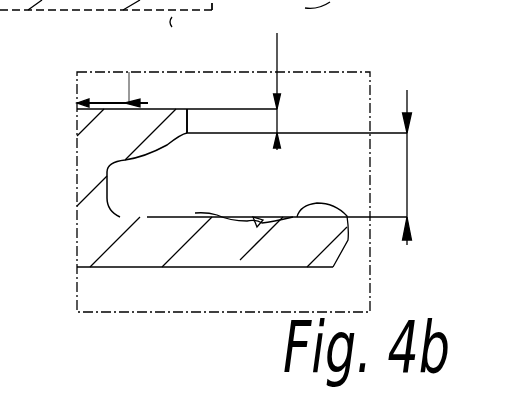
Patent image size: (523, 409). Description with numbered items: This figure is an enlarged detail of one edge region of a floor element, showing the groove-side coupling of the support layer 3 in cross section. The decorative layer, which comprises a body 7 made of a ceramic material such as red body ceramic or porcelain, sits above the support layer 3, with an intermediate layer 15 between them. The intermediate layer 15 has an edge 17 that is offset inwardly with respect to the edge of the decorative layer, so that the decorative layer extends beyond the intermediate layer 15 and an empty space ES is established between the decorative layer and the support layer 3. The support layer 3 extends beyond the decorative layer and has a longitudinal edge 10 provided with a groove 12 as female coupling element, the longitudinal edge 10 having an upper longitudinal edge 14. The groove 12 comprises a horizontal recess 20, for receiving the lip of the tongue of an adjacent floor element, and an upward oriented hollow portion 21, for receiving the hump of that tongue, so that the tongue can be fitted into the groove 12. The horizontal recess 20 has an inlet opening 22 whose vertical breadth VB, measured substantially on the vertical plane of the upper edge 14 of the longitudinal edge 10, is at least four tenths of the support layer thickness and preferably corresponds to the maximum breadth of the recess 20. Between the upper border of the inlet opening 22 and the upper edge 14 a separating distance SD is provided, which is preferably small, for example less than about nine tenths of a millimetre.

The longitudinal edge 10 is at (380, 251).
The groove 12 is at (317, 131).
The upper longitudinal edge 14 is at (188, 110).
The edge of the intermediate layer 17 is at (97, 102).
The horizontal recess 20 is at (135, 211).
The upward oriented hollow portion 21 is at (263, 220).
The inlet opening 22 is at (203, 198).
The empty space ES is at (146, 102).
The separating distance SD is at (278, 68).
The vertical breadth VB is at (408, 173).
The intermediate layer 15 is at (0, 110).
The body 7 is at (7, 42).
The support layer 3 is at (10, 260).